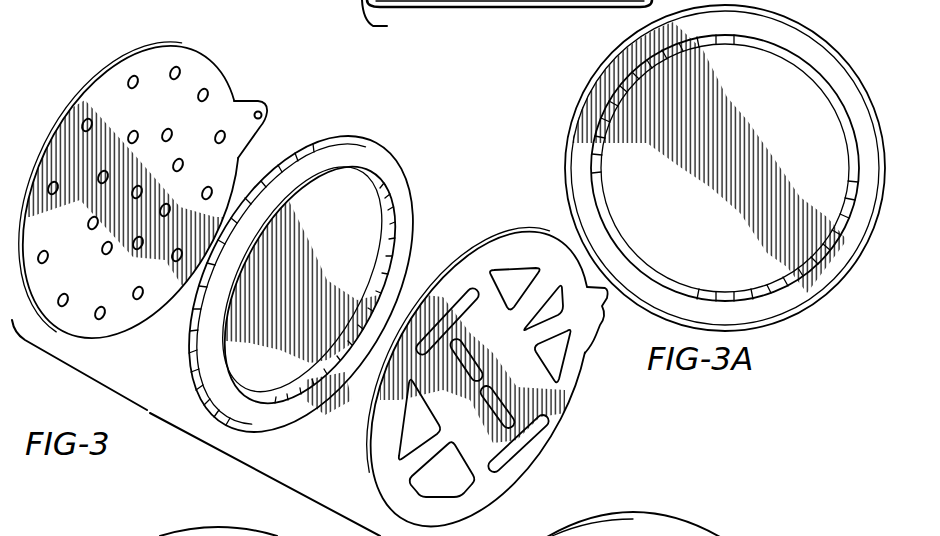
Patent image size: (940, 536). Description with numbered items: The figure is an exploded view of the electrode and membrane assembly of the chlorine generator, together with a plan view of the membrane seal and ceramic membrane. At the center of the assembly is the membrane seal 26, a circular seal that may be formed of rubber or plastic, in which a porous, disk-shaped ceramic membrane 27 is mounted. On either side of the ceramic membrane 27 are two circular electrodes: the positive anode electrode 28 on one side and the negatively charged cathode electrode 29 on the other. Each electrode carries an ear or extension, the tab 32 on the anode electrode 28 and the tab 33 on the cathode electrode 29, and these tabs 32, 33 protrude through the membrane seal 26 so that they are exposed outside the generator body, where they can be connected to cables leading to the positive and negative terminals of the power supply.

In FIG. 3, the membrane seal 26 is at (410, 207).
In FIG. 3A, the membrane seal 26 is at (820, 53).
In FIG. 3, the porous ceramic membrane 27 is at (357, 190).
In FIG. 3A, the porous ceramic membrane 27 is at (777, 83).
In FIG. 3, the anode electrode 28 is at (485, 260).
In FIG. 3, the cathode electrode 29 is at (216, 78).
In FIG. 3, the tab 32 is at (594, 337).
In FIG. 3, the tab 33 is at (255, 126).